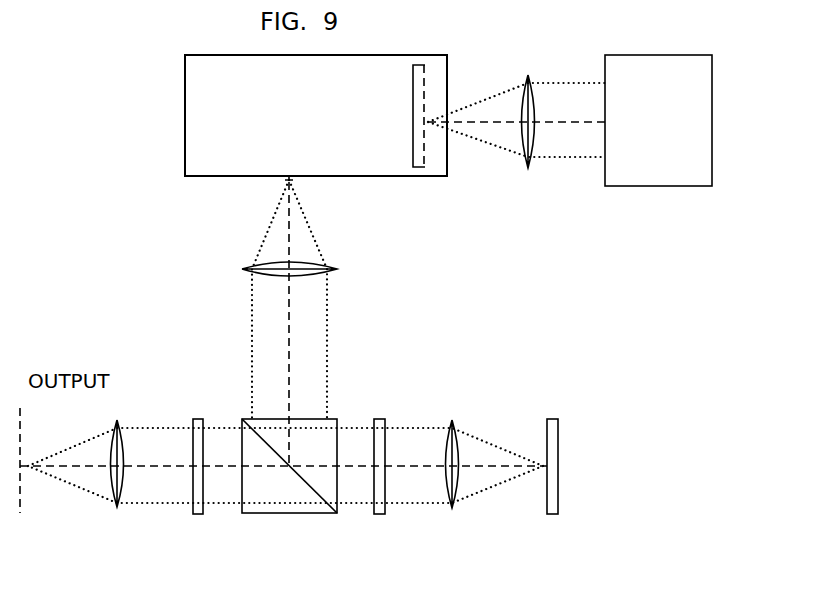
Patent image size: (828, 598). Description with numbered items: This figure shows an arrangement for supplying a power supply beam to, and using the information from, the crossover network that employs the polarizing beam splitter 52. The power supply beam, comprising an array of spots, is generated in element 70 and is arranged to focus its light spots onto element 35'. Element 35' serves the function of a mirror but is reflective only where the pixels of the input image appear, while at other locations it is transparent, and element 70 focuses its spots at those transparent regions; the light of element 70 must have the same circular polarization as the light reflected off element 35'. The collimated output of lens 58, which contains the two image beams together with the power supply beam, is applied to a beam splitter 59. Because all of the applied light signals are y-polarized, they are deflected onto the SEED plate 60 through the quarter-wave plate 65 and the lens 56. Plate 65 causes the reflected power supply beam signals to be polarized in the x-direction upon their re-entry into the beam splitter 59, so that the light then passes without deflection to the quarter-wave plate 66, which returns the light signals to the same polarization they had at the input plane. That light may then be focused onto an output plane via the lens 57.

The polarizing beam splitter 52 is at (212, 148).
The element (partially reflective mirror) 35' is at (433, 161).
The power supply beam generating element 70 is at (653, 175).
The lens 58 is at (337, 268).
The lens 57 is at (117, 503).
The quarter-wave plate 66 is at (193, 420).
The beam splitter 59 is at (290, 493).
The quarter-wave plate 65 is at (383, 425).
The lens 56 is at (452, 506).
The SEED plate 60 is at (555, 435).